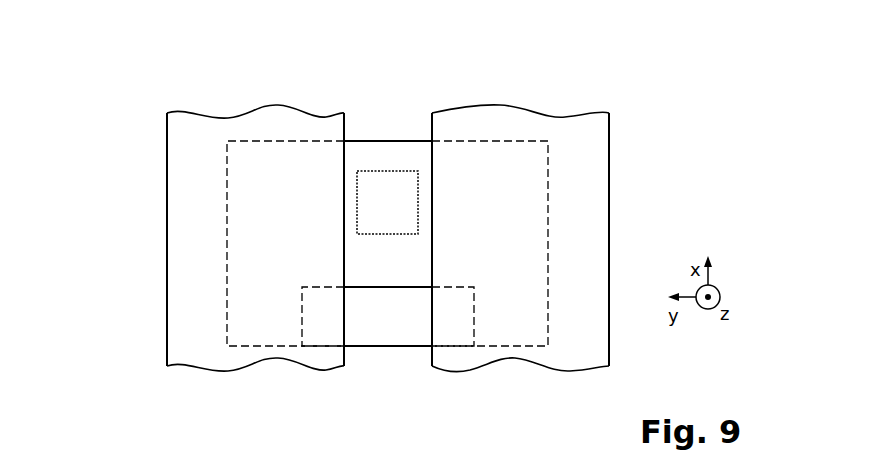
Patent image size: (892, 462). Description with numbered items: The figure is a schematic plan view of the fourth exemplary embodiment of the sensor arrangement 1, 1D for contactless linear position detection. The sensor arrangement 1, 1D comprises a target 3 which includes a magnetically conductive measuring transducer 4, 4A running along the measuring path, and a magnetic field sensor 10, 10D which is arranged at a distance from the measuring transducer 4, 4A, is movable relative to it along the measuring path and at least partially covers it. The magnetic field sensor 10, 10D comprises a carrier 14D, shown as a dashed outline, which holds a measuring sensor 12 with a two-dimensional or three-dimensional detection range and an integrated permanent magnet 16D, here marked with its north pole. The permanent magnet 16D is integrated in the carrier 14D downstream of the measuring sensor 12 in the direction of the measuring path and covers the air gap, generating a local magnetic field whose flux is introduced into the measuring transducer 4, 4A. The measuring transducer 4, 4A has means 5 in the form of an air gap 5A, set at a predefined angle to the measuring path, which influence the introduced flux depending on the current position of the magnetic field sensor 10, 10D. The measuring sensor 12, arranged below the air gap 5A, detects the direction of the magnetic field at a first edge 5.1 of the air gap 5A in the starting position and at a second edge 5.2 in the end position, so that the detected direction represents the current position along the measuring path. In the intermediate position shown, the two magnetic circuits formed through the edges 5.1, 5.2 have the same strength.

The sensor arrangement 1 is at (358, 224).
The sensor arrangement 1D is at (162, 78).
The magnetic field sensor 10 is at (186, 238).
The magnetic field sensor 10D is at (114, 188).
The target 3 is at (645, 181).
The measuring transducer 4 is at (522, 92).
The measuring transducer 4A is at (573, 123).
The means for influencing the magnetic flux 5 is at (388, 287).
The air gap 5A is at (391, 355).
The first edge of the air gap 5.1 is at (352, 275).
The second edge of the air gap 5.2 is at (424, 275).
The carrier 14D is at (362, 140).
The measuring sensor 12 is at (397, 183).
The permanent magnet 16D is at (363, 334).